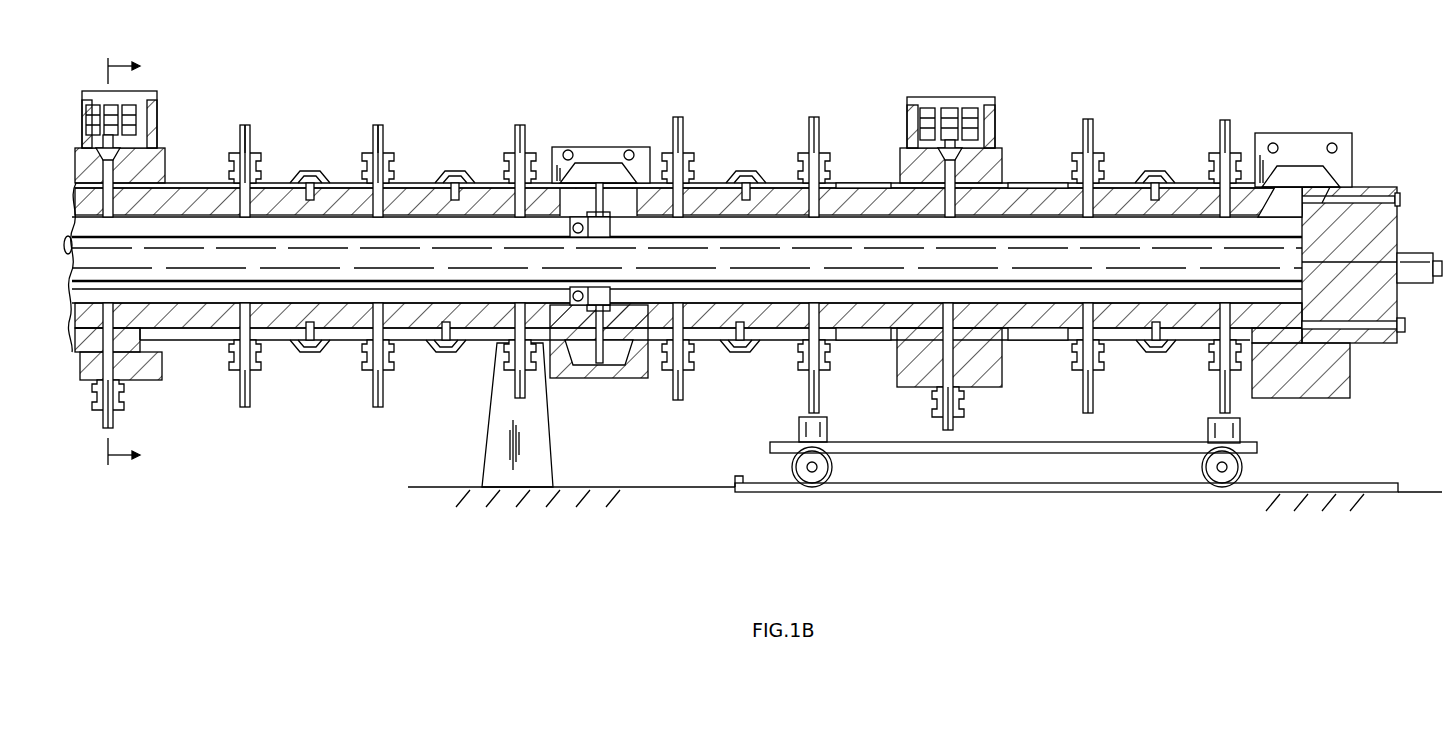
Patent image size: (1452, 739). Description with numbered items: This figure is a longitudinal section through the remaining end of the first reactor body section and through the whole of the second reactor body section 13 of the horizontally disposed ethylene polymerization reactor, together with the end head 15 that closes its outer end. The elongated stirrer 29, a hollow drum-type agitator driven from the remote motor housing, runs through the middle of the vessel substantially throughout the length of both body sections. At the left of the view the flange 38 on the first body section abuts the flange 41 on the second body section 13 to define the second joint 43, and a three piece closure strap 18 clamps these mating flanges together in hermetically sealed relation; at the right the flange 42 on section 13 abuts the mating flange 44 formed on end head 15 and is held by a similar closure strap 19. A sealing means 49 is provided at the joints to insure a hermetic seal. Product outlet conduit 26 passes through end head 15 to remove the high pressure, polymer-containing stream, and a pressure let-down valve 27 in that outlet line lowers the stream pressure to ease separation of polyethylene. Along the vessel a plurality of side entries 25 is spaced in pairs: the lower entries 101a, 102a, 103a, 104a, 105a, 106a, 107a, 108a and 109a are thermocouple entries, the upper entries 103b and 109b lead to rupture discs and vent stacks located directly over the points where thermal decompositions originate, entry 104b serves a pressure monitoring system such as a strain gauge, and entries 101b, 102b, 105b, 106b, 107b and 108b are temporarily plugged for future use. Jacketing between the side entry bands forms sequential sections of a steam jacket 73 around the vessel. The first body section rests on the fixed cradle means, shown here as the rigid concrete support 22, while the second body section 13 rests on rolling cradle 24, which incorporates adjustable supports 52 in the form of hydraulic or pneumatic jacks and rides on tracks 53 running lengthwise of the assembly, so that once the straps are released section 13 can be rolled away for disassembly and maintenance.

The second reactor body section 13 is at (753, 270).
The end head 15 is at (1362, 241).
The strap 18 is at (609, 148).
The strap 19 is at (1338, 135).
The rigid support 22 is at (490, 448).
The rolling cradle 24 is at (898, 460).
The side entries 25 is at (376, 124).
The product outlet conduit 26 is at (1392, 252).
The pressure let-down valve 27 is at (1412, 284).
The stirrer 29 is at (757, 270).
The flange 38 is at (594, 202).
The flange 41 is at (626, 202).
The flange 42 is at (1292, 213).
The second joint 43 is at (572, 322).
The mating flange 44 is at (1317, 184).
The sealing means 49 is at (600, 224).
The adjustable supports 52 is at (800, 418).
The tracks 53 is at (938, 492).
The steam jacket 73 is at (1017, 197).
The side entry 101a is at (1235, 398).
The side entry 101b is at (1232, 140).
The side entry 102a is at (1093, 398).
The side entry 102b is at (1093, 142).
The side entry 103a is at (957, 418).
The side entry 103b is at (997, 142).
The side entry 104a is at (820, 390).
The side entry 104b is at (819, 142).
The side entry 105a is at (680, 397).
The side entry 105b is at (683, 142).
The side entry 106a is at (528, 386).
The side entry 106b is at (525, 140).
The side entry 107a is at (385, 400).
The side entry 107b is at (383, 142).
The side entry 108a is at (248, 400).
The side entry 108b is at (250, 142).
The side entry 109a is at (150, 418).
The side entry 109b is at (148, 136).